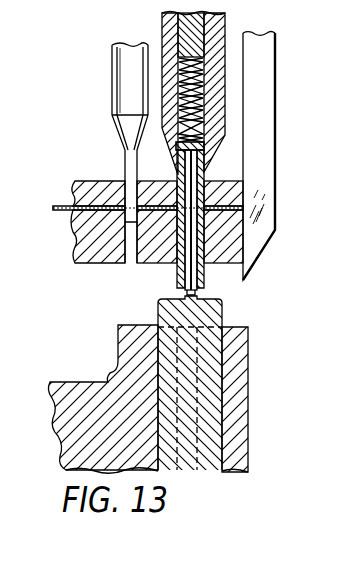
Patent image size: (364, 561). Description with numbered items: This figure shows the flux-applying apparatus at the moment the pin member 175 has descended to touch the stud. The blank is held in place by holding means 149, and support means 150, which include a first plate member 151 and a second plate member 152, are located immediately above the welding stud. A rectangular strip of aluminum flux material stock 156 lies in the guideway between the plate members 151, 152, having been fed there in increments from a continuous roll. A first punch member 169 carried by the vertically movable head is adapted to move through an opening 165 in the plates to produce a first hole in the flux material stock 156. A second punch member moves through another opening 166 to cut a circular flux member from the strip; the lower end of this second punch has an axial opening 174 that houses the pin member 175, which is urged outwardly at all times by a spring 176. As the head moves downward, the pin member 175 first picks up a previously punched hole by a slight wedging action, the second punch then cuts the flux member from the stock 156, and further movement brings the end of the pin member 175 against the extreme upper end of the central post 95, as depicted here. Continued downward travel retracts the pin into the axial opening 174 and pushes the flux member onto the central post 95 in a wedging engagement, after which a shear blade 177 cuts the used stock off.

The support means 150 is at (72, 128).
The first punch member 169 is at (113, 68).
The opening 165 is at (127, 262).
The first plate member 151 is at (80, 182).
The flux material stock 156 is at (54, 209).
The second plate member 152 is at (73, 246).
The opening 166 is at (173, 264).
The pin member 175 is at (203, 278).
The axial opening 174 is at (203, 88).
The spring 176 is at (203, 70).
The shear blade 177 is at (276, 162).
The central post 95 is at (198, 298).
The holding means 149 is at (118, 365).